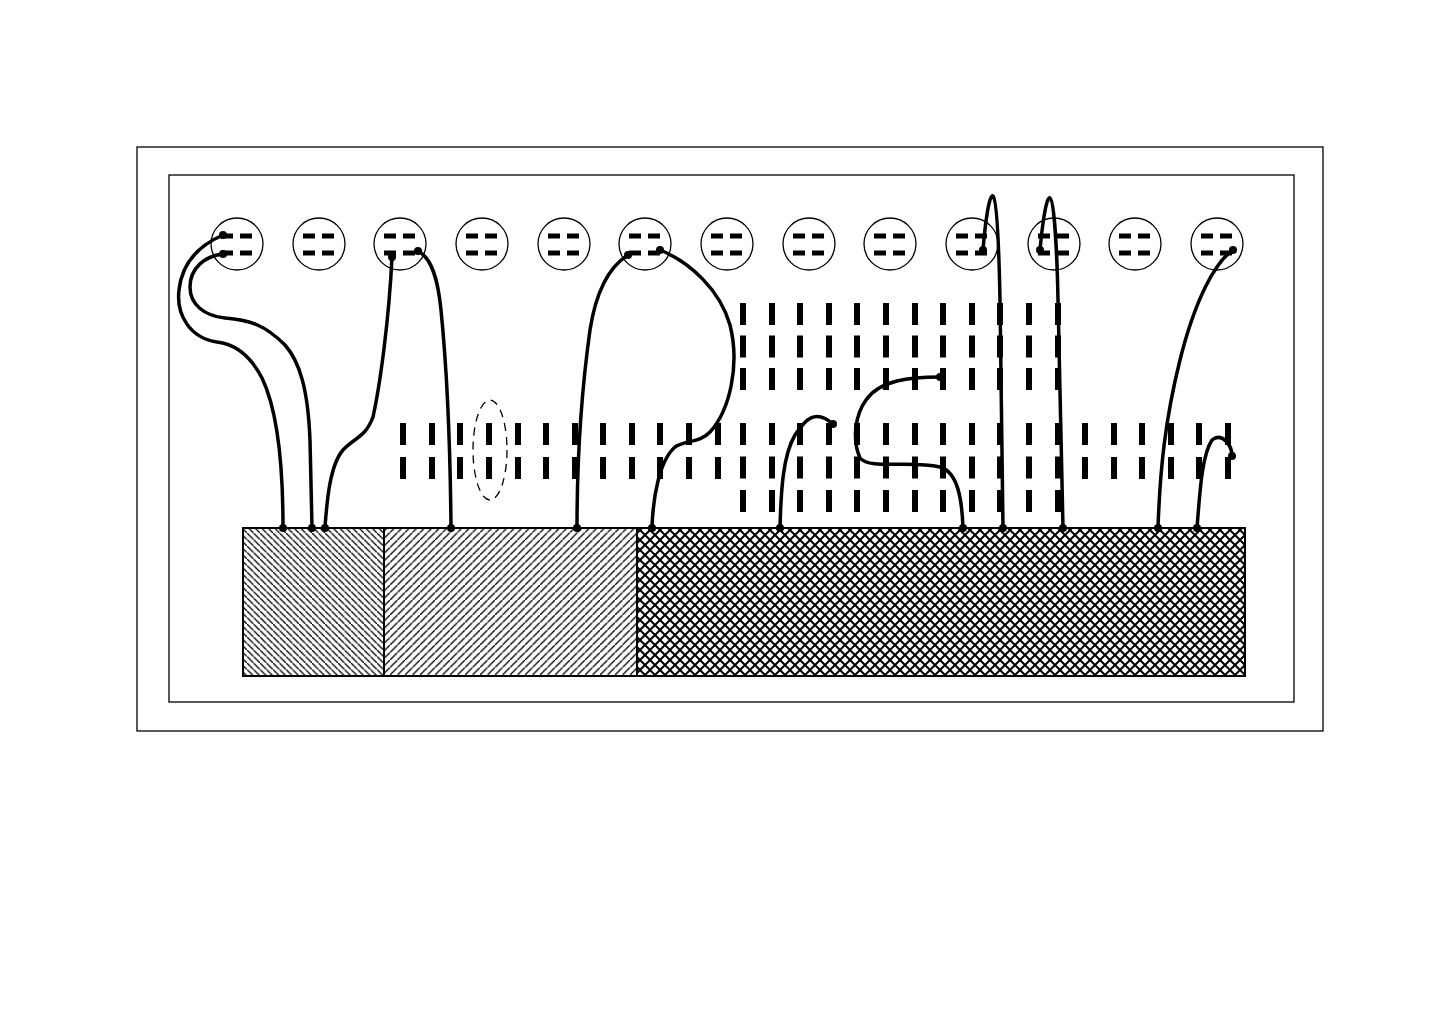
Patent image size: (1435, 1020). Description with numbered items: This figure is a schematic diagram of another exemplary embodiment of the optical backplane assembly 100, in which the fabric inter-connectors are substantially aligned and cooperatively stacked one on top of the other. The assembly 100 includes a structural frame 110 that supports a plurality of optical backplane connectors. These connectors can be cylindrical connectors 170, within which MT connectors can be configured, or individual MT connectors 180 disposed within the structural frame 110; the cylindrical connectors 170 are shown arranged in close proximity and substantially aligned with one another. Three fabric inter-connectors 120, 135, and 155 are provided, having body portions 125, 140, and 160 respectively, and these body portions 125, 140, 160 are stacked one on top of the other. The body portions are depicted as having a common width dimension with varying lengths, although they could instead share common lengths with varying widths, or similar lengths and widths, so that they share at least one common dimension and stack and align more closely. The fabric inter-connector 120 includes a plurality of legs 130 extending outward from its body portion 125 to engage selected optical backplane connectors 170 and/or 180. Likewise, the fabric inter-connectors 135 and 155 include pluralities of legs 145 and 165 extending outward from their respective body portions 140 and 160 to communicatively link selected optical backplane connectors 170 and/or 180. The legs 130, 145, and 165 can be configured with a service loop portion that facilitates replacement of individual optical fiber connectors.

The optical backplane assembly 100 is at (131, 71).
The structural frame 110 is at (413, 147).
The fabric inter-connector 120 is at (277, 690).
The body portion 125 is at (354, 614).
The legs 130 is at (342, 460).
The fabric inter-connector 135 is at (563, 690).
The body portion 140 is at (616, 614).
The legs 145 is at (443, 352).
The fabric inter-connector 155 is at (890, 693).
The body portion 160 is at (1053, 645).
The legs 165 is at (983, 250).
The cylindrical connectors 170 is at (812, 218).
The MT connectors 180 is at (487, 528).